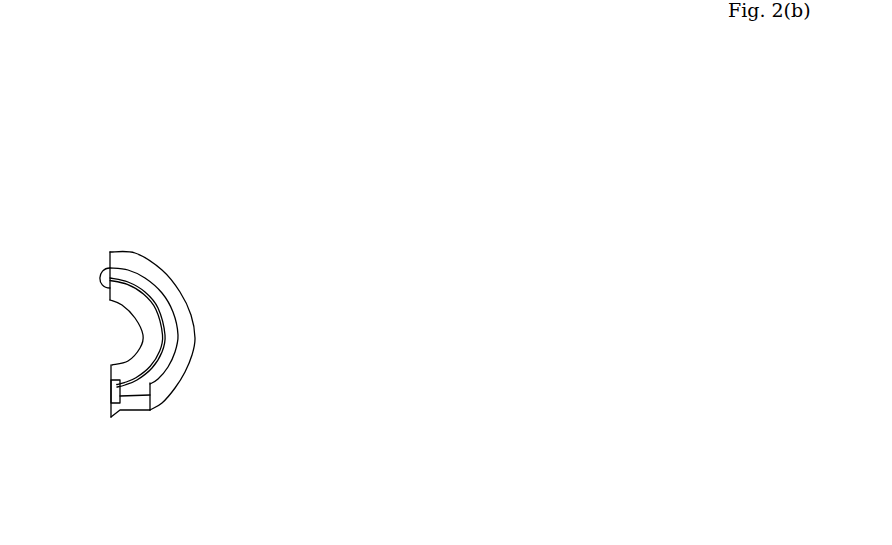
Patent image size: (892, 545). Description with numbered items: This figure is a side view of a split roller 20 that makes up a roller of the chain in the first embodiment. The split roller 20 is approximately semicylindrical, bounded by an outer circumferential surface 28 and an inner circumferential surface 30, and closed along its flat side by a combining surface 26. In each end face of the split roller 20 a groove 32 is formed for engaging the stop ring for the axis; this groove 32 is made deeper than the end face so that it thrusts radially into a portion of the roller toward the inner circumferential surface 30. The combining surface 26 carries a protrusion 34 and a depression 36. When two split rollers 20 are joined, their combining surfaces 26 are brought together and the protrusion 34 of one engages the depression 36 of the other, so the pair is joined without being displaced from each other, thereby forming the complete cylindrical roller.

The split roller 20 is at (108, 173).
The combining surface 26 is at (110, 410).
The outer circumferential surface 28 is at (177, 283).
The inner circumferential surface 30 is at (130, 354).
The groove 32 is at (150, 410).
The protrusion 34 is at (98, 276).
The depression 36 is at (111, 395).